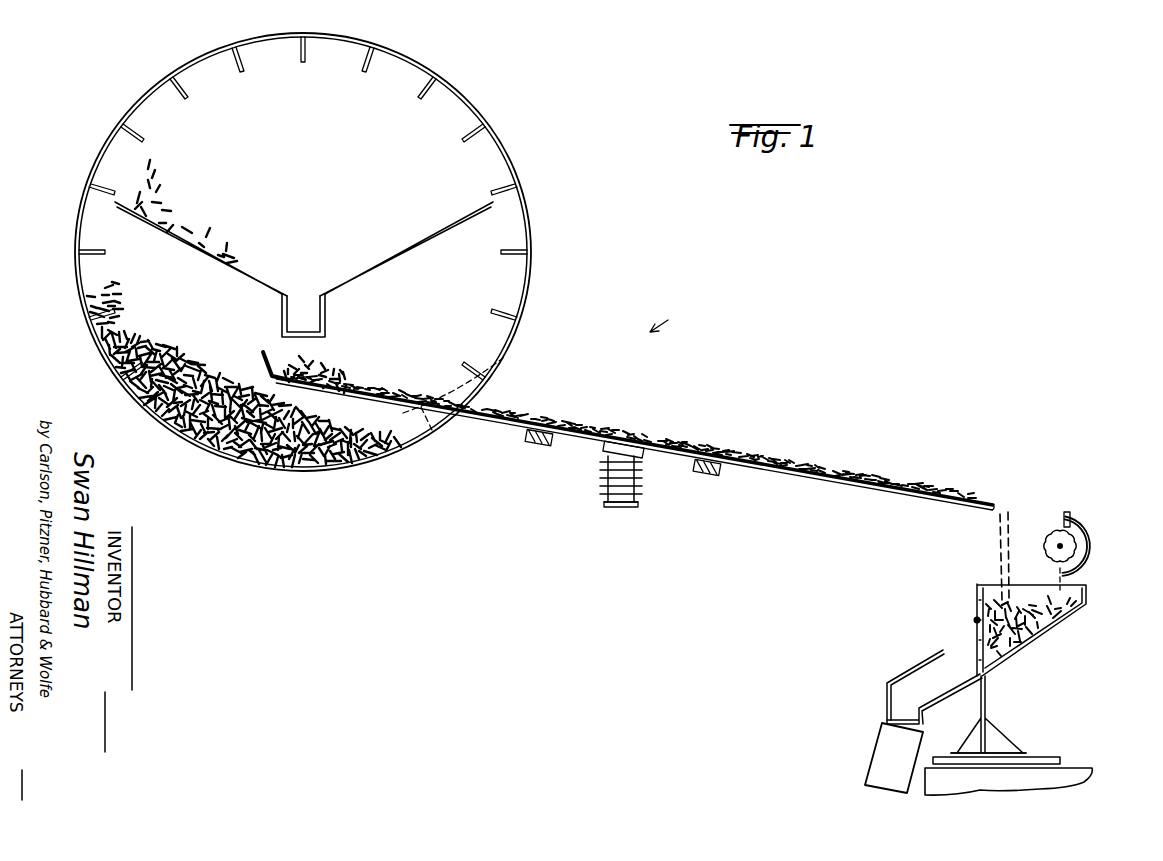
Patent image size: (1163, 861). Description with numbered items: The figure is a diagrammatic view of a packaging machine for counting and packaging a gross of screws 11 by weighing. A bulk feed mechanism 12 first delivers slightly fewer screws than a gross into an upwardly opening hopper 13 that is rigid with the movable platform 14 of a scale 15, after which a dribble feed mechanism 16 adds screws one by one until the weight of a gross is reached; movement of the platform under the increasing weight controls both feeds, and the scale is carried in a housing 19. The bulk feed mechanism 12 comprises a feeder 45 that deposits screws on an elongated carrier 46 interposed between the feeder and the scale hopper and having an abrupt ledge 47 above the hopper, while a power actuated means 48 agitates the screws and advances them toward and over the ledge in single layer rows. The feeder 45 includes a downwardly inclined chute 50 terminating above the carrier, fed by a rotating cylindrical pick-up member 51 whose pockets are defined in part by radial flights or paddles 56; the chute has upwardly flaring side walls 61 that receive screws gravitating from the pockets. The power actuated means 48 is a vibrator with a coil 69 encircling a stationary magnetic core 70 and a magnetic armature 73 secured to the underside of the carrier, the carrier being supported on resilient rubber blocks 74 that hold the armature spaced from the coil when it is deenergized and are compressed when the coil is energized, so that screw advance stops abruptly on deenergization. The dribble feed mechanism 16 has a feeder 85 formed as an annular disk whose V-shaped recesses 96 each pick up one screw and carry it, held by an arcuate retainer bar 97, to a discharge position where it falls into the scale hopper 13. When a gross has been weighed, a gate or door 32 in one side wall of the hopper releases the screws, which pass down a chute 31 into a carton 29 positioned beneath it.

The screws 11 is at (838, 472).
The bulk feed mechanism 12 is at (670, 317).
The hopper 13 is at (1088, 598).
The movable platform 14 is at (1056, 760).
The scale 15 is at (1077, 757).
The dribble feed mechanism 16 is at (1076, 543).
The housing 19 is at (1082, 775).
The carton 29 is at (883, 750).
The chute 31 is at (882, 690).
The gate or door 32 is at (976, 648).
The feeder 45 is at (394, 178).
The elongated carrier 46 is at (496, 422).
The abrupt ledge 47 is at (992, 515).
The power actuated means 48 is at (609, 471).
The downwardly inclined chute 50 is at (322, 319).
The pick-up member 51 is at (509, 152).
The flights or paddles 56 is at (147, 137).
The side walls 61 is at (238, 270).
The coil 69 is at (642, 494).
The magnetic core 70 is at (616, 503).
The magnetic armature 73 is at (630, 446).
The blocks of resilient material 74 is at (541, 446).
The feeder 85 is at (1070, 525).
The V-shaped recesses 96 is at (1049, 529).
The arcuate retainer bar 97 is at (1090, 565).